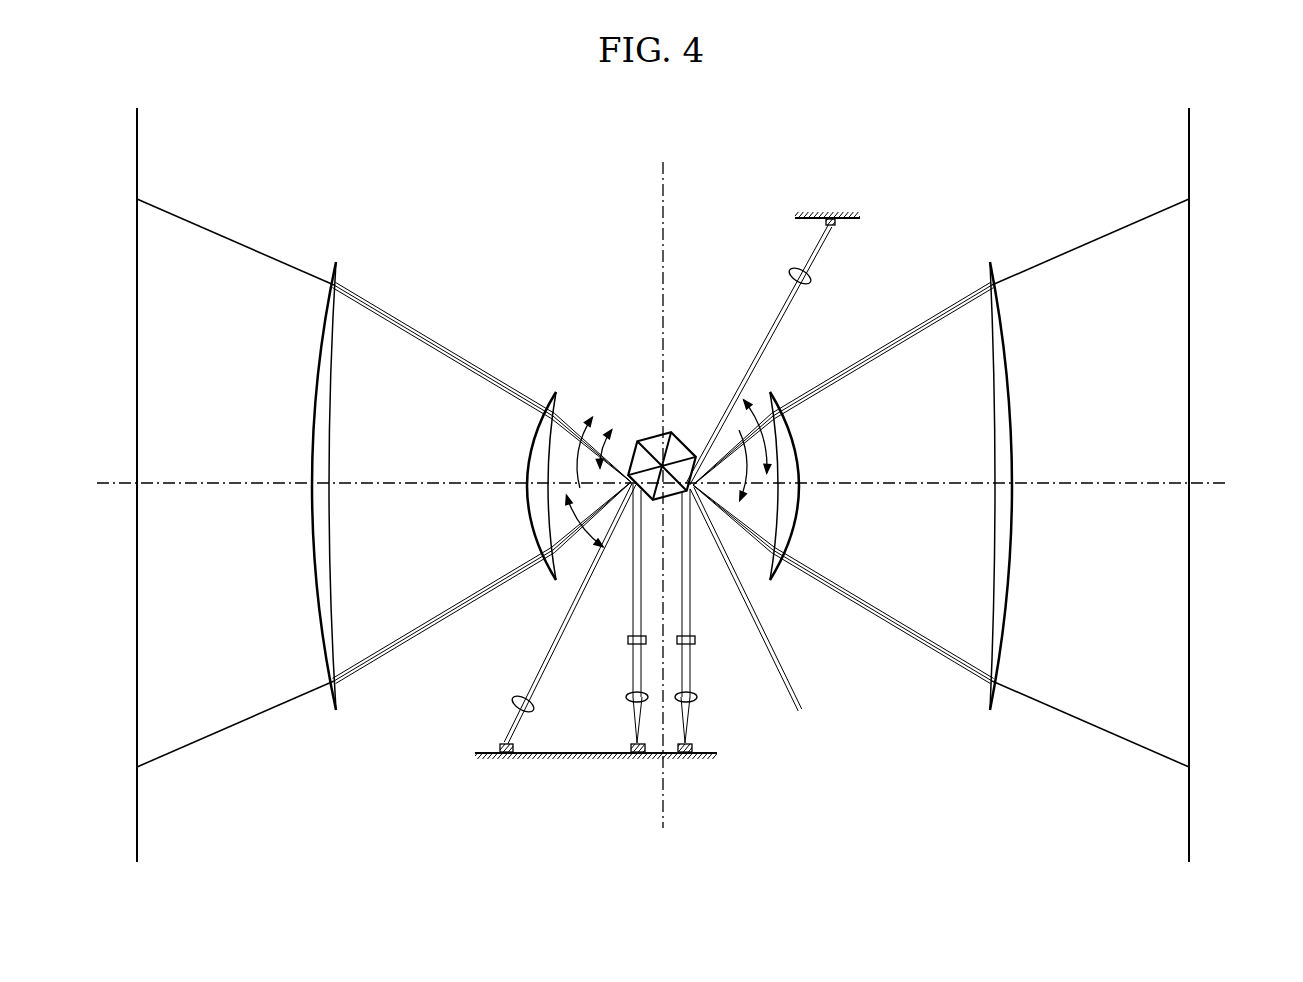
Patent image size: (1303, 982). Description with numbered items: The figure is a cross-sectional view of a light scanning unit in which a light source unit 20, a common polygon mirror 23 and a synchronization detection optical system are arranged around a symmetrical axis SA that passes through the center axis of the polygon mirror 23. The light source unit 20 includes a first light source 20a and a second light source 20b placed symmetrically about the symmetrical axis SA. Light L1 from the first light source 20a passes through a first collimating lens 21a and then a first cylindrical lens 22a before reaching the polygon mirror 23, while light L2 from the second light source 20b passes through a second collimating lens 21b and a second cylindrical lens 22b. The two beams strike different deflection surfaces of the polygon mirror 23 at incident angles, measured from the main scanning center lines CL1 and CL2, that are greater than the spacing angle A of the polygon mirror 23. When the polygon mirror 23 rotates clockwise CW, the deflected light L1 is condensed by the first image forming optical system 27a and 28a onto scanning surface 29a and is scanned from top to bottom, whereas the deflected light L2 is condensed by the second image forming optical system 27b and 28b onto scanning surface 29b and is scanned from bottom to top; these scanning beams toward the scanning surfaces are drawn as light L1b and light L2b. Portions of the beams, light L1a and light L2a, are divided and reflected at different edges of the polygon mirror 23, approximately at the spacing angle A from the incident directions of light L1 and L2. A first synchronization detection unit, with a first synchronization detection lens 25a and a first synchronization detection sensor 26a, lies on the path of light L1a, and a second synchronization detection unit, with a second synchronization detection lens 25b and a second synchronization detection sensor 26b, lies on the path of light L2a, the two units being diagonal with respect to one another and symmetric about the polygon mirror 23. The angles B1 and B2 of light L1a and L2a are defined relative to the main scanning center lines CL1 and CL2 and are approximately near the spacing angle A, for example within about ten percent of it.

The light source unit 20 is at (588, 818).
The first light source 20a is at (698, 752).
The second light source 20b is at (627, 752).
The first collimating lens 21a is at (697, 697).
The second collimating lens 21b is at (626, 697).
The first cylindrical lens 22a is at (697, 640).
The second cylindrical lens 22b is at (628, 640).
The polygon mirror 23 is at (650, 432).
The first synchronization detection lens 25a is at (788, 278).
The second synchronization detection lens 25b is at (519, 697).
The first synchronization detection sensor 26a is at (826, 223).
The second synchronization detection sensor 26b is at (500, 745).
The first image forming optical system scanning lens 27a is at (797, 449).
The second image forming optical system scanning lens 27b is at (530, 450).
The first image forming optical system scanning lens 28a is at (1012, 438).
The second image forming optical system scanning lens 28b is at (317, 610).
The scanning surface 29a is at (1189, 812).
The scanning surface 29b is at (137, 815).
The light L1 is at (692, 602).
The light L2 is at (633, 602).
The light L1a is at (785, 320).
The first scanning beam L1b is at (933, 322).
The light L2a is at (542, 682).
The second scanning beam L2b is at (368, 655).
The main scanning center line CL1 is at (1093, 488).
The main scanning center line CL2 is at (162, 487).
The symmetrical axis SA is at (660, 205).
The spacing angle A is at (598, 412).
The clockwise CW is at (695, 383).
The angle B1 is at (757, 393).
The angle B2 is at (560, 506).